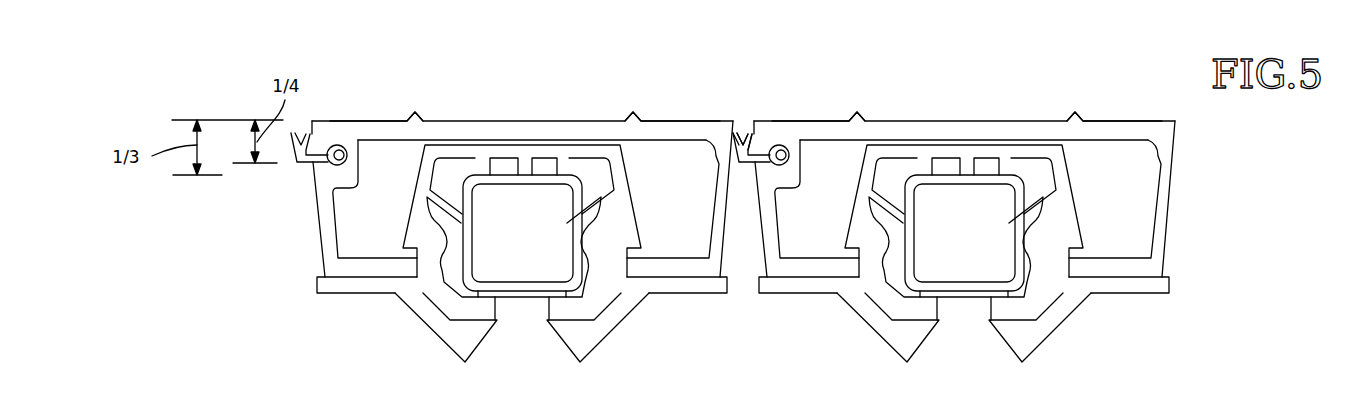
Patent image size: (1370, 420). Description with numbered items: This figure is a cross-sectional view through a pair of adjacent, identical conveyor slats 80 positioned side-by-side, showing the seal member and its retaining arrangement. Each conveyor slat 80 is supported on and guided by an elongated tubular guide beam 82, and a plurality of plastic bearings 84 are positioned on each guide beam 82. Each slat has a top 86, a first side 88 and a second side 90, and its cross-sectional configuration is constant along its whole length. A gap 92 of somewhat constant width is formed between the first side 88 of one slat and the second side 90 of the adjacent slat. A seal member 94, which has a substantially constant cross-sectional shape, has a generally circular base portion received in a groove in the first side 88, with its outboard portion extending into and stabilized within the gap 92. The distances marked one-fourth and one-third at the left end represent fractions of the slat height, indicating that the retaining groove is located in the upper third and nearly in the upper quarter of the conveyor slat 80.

The conveyor slat 80 is at (509, 134).
The tubular guide beam 82 is at (577, 233).
The plastic bearing 84 is at (557, 150).
The top 86 is at (372, 121).
The first side 88 is at (322, 240).
The second side 90 is at (723, 217).
The gap 92 is at (747, 122).
The seal member 94 is at (299, 166).